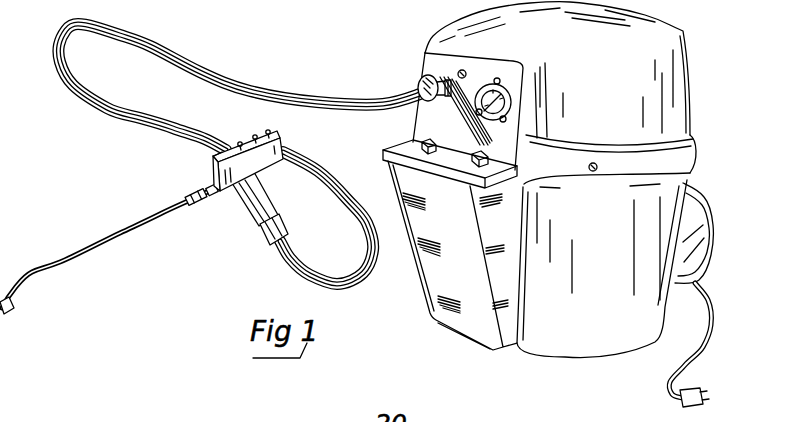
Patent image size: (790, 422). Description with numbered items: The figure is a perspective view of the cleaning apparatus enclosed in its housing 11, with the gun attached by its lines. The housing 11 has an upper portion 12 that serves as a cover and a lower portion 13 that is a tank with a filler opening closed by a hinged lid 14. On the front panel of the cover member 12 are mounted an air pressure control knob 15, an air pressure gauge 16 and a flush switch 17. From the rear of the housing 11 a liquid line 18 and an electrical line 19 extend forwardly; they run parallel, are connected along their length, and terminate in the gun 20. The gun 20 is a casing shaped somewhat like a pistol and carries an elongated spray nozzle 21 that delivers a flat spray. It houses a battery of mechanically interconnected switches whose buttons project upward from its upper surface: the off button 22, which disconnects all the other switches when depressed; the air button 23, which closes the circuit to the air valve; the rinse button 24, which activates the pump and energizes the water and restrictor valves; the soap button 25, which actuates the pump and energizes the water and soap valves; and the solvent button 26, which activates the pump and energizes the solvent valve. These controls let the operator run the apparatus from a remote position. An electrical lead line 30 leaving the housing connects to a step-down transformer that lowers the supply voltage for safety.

The housing 11 is at (555, 204).
The upper portion 12 is at (680, 82).
The lower portion 13 is at (607, 345).
The hinged lid 14 is at (405, 148).
The air pressure control knob 15 is at (418, 88).
The air pressure gauge 16 is at (497, 81).
The flush switch 17 is at (458, 74).
The liquid line 18 is at (343, 237).
The electrical line 19 is at (308, 280).
The gun 20 is at (236, 134).
The elongated spray nozzle 21 is at (124, 232).
The off button 22 is at (270, 131).
The air button 23 is at (260, 133).
The rinse button 24 is at (250, 136).
The soap button 25 is at (240, 140).
The solvent button 26 is at (215, 148).
The electrical lead line 30 is at (710, 320).